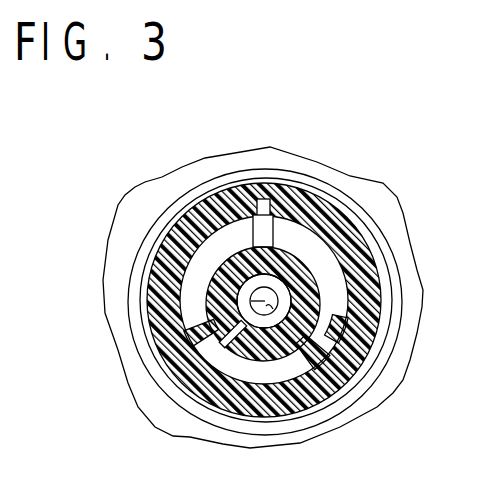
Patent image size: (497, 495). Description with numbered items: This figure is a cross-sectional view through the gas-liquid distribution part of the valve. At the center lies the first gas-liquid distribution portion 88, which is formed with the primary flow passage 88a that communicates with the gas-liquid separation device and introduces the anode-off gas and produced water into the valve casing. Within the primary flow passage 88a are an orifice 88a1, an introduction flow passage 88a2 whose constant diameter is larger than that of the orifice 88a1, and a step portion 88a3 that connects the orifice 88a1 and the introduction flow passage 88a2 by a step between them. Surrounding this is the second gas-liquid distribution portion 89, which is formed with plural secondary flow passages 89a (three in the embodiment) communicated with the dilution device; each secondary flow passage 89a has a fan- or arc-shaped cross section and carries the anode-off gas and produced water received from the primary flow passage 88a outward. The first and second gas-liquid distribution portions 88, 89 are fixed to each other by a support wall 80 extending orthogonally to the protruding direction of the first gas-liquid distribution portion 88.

The support wall 80 is at (210, 212).
The first gas-liquid distribution portion 88 is at (153, 316).
The primary flow passage 88a is at (212, 343).
The orifice 88a1 is at (318, 366).
The introduction flow passage 88a2 is at (237, 315).
The step portion 88a3 is at (277, 318).
The second gas-liquid distribution portion 89 is at (372, 178).
The secondary flow passages 89a is at (338, 262).